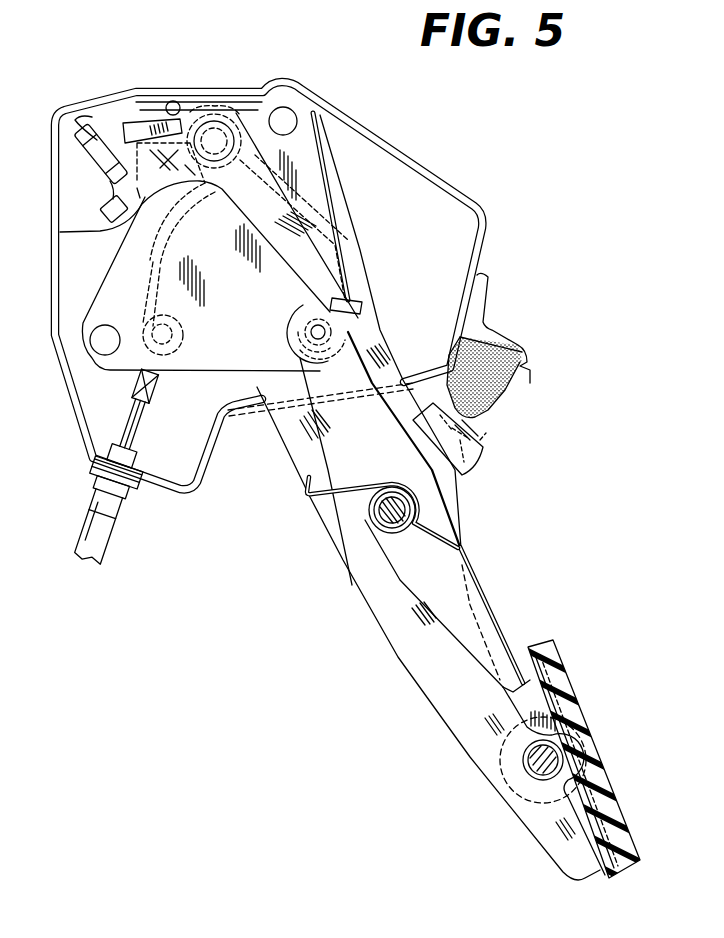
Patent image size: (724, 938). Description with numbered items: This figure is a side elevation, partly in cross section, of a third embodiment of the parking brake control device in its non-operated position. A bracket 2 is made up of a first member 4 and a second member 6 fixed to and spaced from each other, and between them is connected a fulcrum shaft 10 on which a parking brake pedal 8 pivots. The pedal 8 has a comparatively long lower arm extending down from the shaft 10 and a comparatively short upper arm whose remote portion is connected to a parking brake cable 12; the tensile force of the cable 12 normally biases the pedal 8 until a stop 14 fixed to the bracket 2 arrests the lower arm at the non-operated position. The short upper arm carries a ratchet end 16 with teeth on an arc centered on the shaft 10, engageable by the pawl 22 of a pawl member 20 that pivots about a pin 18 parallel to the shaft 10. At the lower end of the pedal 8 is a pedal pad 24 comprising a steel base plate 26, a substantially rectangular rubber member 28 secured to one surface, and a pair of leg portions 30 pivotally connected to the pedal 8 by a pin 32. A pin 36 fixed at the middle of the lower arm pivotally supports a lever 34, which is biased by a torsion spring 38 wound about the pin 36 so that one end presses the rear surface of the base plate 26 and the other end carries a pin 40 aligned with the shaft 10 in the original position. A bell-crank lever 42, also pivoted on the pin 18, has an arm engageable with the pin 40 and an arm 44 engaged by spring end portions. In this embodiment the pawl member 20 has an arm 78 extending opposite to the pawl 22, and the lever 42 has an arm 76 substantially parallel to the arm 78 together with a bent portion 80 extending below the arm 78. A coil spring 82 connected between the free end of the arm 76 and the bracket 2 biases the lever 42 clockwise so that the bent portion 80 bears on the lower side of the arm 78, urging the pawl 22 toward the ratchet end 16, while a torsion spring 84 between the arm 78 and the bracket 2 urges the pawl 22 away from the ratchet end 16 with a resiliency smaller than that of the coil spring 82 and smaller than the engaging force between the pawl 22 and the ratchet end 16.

The bracket 2 is at (437, 139).
The first member 4 is at (447, 213).
The second member 6 is at (303, 147).
The parking brake pedal 8 is at (398, 657).
The fulcrum shaft 10 is at (299, 304).
The parking brake cable 12 is at (140, 433).
The stop 14 is at (497, 393).
The ratchet end 16 is at (150, 273).
The pin 18 is at (216, 130).
The pawl member 20 is at (258, 115).
The pawl 22 is at (313, 112).
The pedal pad 24 is at (576, 744).
The base plate 26 is at (547, 678).
The rubber member 28 is at (613, 807).
The leg portions 30 is at (543, 803).
The pin 32 is at (530, 767).
The lever 34 is at (447, 563).
The pin 36 is at (383, 523).
The torsion spring 38 is at (323, 497).
The pin 40 is at (327, 330).
The bell-crank lever 42 is at (318, 207).
The arm 44 is at (300, 250).
The arm 76 is at (97, 231).
The arm 78 is at (127, 123).
The bent portion 80 is at (96, 103).
The coil spring 82 is at (100, 171).
The torsion spring 84 is at (150, 99).